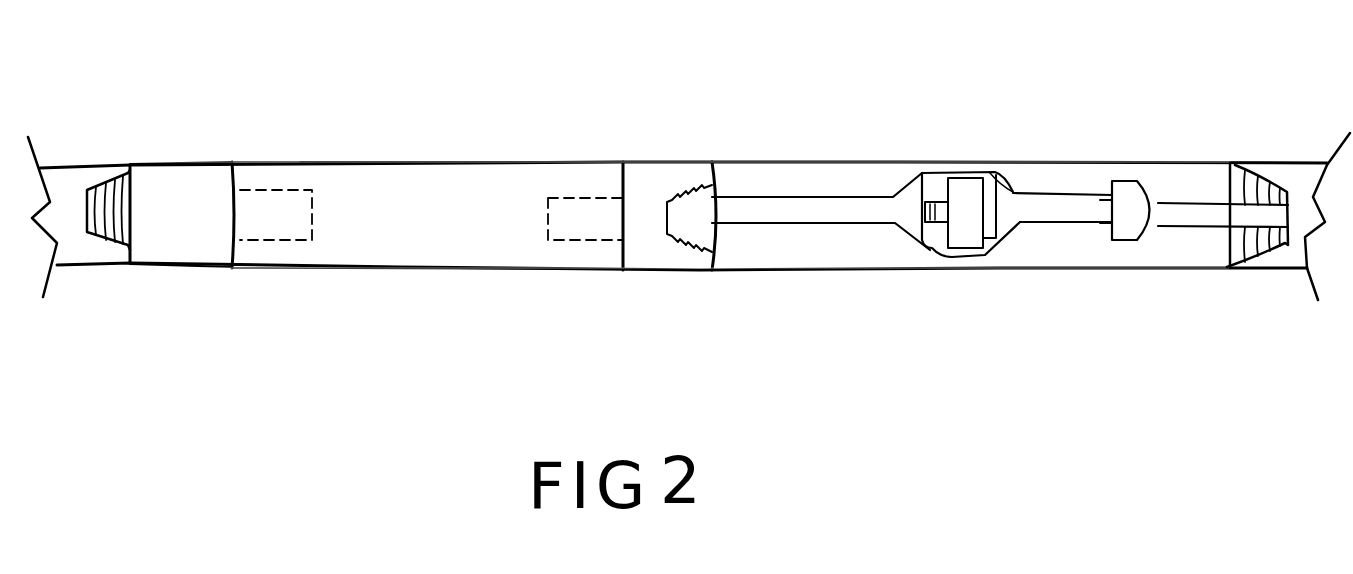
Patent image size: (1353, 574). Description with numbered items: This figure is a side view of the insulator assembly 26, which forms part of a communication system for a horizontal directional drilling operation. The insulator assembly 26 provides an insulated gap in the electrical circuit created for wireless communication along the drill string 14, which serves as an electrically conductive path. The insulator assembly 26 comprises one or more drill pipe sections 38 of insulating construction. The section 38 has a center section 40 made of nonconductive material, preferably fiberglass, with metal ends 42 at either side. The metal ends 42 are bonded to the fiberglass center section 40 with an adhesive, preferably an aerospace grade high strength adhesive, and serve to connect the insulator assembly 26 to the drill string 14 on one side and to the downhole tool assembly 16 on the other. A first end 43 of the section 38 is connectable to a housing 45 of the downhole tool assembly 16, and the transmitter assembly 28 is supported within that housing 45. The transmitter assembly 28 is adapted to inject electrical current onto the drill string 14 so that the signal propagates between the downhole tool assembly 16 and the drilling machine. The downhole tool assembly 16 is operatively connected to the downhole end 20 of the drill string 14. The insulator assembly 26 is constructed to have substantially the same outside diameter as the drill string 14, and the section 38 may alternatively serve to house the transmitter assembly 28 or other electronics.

The drill string 14 is at (83, 162).
The downhole tool assembly 16 is at (1084, 313).
The downhole end 20 is at (98, 267).
The insulator assembly 26 is at (445, 113).
The transmitter assembly 28 is at (947, 232).
The drill pipe section 38 is at (388, 270).
The center section 40 is at (365, 160).
The metal ends 42 is at (163, 160).
The first end 43 is at (693, 270).
The housing 45 is at (800, 162).